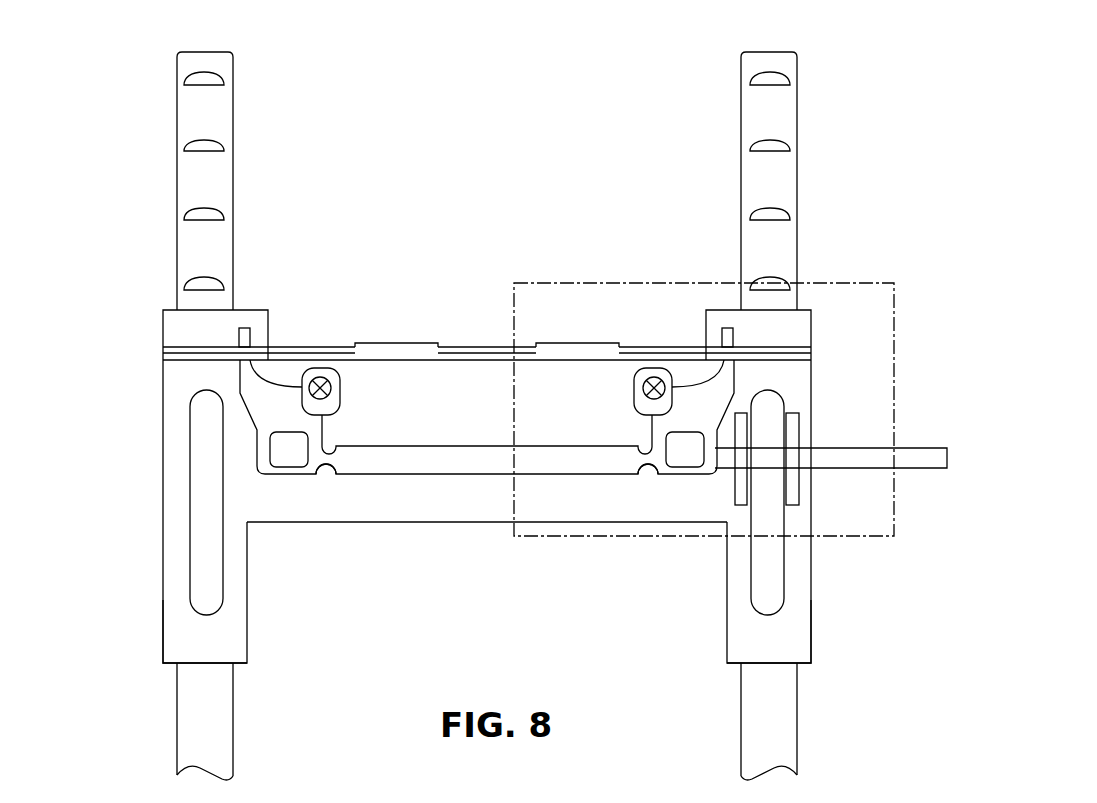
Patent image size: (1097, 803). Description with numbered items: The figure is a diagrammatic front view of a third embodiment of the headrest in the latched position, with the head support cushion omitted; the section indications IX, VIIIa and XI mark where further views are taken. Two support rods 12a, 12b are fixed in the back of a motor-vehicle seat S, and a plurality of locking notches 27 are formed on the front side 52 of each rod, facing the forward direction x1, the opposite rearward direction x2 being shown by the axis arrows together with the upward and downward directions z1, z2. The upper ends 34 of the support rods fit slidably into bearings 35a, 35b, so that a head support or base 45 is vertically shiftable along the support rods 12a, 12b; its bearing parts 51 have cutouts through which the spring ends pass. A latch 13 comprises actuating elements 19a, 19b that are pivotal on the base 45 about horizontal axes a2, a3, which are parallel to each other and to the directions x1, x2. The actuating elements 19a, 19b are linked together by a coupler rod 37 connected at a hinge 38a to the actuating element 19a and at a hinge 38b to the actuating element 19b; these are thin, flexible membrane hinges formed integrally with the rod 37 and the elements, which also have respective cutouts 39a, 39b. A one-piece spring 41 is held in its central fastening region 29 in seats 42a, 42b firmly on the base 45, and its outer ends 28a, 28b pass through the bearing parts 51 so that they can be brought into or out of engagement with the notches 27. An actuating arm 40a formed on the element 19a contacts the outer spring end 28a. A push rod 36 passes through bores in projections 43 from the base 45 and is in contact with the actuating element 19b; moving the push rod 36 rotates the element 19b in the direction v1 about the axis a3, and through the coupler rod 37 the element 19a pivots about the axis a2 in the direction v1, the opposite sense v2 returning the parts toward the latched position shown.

The support rod 12a is at (790, 722).
The support rod 12b is at (185, 722).
The latch 13 is at (429, 434).
The actuating element 19a is at (652, 426).
The actuating element 19b is at (322, 426).
The locking notch 27 is at (225, 84).
The outer spring end 28a is at (791, 357).
The outer spring end 28b is at (183, 357).
The central fastening region 29 is at (488, 328).
The upper end of support rod 34 is at (193, 251).
The bearing 35a is at (750, 648).
The bearing 35b is at (226, 648).
The push rod 36 is at (921, 452).
The coupler rod 37 is at (432, 462).
The hinge 38a is at (644, 466).
The hinge 38b is at (327, 478).
The cutout 39a is at (683, 458).
The cutout 39b is at (290, 458).
The actuating arm 40a is at (245, 326).
The one-piece spring 41 is at (488, 346).
The seat 42a is at (553, 346).
The seat 42b is at (418, 346).
The projection 43 is at (800, 425).
The head support or base 45 is at (553, 513).
The bearing part 51 is at (165, 631).
The front side 52 is at (203, 108).
The motor-vehicle seat S is at (235, 781).
The pivot axis a2 is at (323, 383).
The pivot axis a3 is at (651, 383).
The pivot direction v1 is at (283, 362).
The pivot direction v2 is at (293, 386).
The forward direction x1 is at (968, 137).
The rearward direction x2 is at (1071, 148).
The upward direction z1 is at (1013, 150).
The downward direction z2 is at (1013, 150).
The section IX boundary IX is at (895, 536).
The section VIIIa arrows VIIIa is at (744, 320).
The section XI arrows XI is at (131, 353).